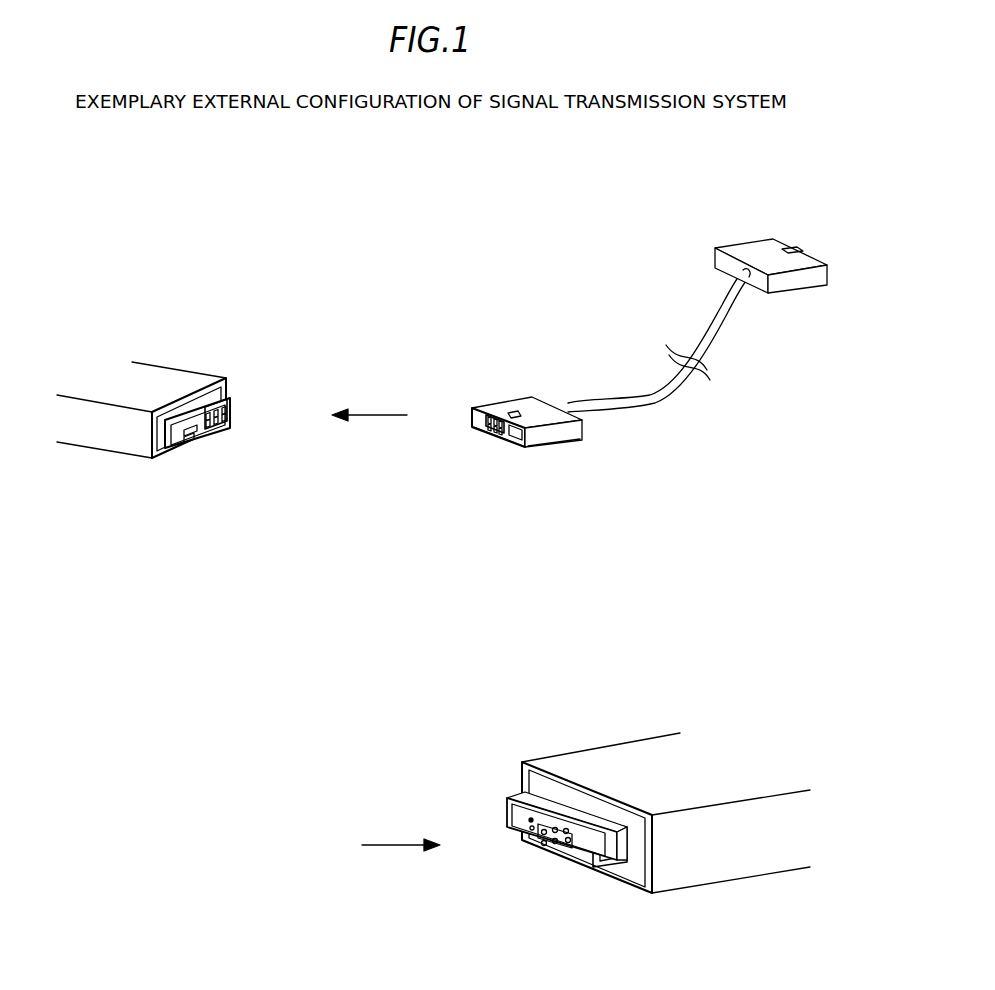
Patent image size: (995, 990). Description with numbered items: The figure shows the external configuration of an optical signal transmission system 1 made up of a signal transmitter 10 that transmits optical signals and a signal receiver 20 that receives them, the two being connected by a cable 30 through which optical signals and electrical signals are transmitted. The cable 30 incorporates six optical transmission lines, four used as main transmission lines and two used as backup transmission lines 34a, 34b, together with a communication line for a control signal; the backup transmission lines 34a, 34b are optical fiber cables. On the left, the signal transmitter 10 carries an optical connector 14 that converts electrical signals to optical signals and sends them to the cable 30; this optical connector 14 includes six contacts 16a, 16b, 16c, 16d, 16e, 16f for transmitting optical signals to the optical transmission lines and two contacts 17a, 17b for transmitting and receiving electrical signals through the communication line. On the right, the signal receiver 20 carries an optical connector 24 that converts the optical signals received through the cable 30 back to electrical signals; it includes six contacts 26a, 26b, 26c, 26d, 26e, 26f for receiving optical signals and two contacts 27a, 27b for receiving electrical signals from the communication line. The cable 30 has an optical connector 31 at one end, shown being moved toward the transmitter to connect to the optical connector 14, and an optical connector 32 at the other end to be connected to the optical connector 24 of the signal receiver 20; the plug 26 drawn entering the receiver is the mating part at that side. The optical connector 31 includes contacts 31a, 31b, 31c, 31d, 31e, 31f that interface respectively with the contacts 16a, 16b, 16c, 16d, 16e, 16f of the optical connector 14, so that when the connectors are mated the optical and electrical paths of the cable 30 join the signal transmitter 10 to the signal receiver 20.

The signal transmission system 1 is at (203, 673).
The signal transmitter 10 is at (88, 304).
The optical connector 14 is at (238, 424).
The contact 16a is at (232, 409).
The contact 16b is at (219, 413).
The contact 16c is at (206, 418).
The contact 16d is at (232, 428).
The contact 16e is at (208, 434).
The contact 16f is at (194, 440).
The contact 17a is at (174, 427).
The contact 17b is at (177, 440).
The signal receiver 20 is at (590, 689).
The optical connector 24 is at (603, 859).
The plug connector 26 is at (524, 834).
The contact 26a is at (567, 832).
The contact 26b is at (554, 828).
The contact 26c is at (543, 830).
The contact 26d is at (571, 849).
The contact 26e is at (557, 843).
The contact 26f is at (545, 845).
The contact 27a is at (531, 819).
The contact 27b is at (530, 828).
The cable 30 is at (646, 402).
The optical connector 31 is at (475, 432).
The contact 31a is at (477, 410).
The contact 31b is at (497, 412).
The contact 31c is at (503, 416).
The contact 31d is at (490, 430).
The contact 31e is at (503, 437).
The contact 31f is at (517, 447).
The optical connector 32 is at (773, 293).
The backup transmission line 34a is at (556, 443).
The backup transmission line 34b is at (530, 450).